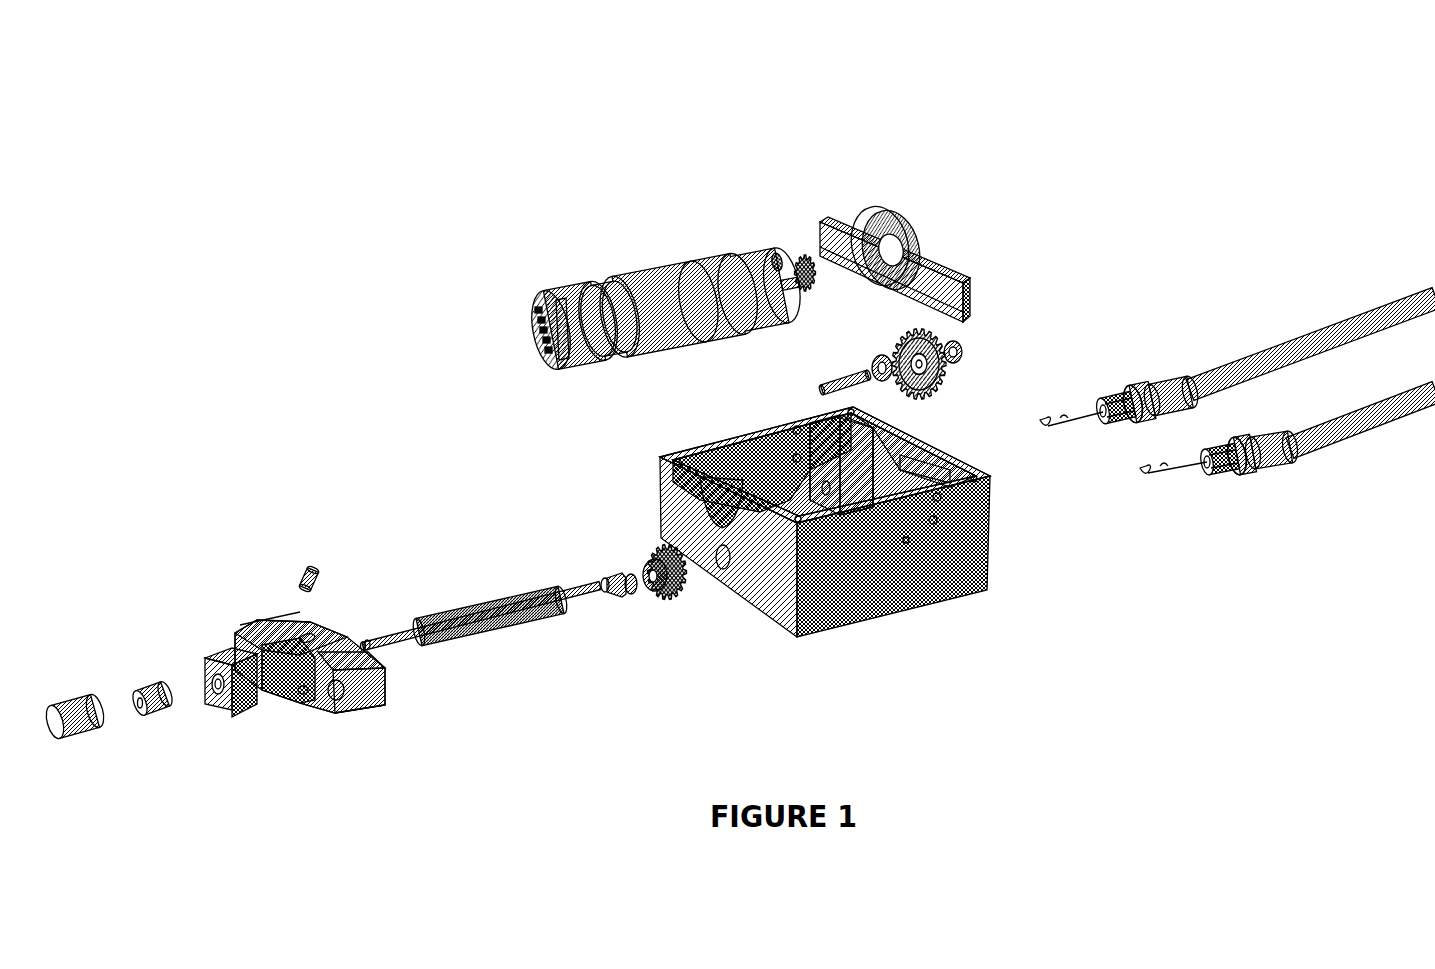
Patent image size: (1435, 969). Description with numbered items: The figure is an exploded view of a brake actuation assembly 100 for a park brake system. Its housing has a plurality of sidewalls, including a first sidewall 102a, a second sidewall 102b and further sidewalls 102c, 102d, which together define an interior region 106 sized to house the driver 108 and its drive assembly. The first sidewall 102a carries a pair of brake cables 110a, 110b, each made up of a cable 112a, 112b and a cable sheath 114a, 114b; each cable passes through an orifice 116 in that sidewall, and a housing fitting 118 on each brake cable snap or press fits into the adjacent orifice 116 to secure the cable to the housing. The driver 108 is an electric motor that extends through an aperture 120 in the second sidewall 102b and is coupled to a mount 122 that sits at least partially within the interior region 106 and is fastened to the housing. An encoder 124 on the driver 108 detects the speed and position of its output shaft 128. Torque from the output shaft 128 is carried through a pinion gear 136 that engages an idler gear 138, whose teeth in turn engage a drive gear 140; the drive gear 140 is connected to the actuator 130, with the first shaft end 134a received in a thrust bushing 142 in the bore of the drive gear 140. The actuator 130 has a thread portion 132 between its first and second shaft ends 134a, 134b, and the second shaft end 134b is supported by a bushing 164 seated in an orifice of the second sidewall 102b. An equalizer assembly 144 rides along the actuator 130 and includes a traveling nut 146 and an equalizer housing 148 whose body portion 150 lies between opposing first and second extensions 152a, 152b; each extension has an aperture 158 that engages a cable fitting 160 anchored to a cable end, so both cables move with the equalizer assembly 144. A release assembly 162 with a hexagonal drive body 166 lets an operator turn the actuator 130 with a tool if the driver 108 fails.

The brake actuation assembly 100 is at (1100, 160).
The first sidewall 102a is at (900, 447).
The second sidewall 102b is at (752, 600).
The sidewall 102c is at (900, 590).
The sidewall 102d is at (740, 437).
The interior region 106 is at (777, 447).
The driver 108 is at (653, 268).
The first brake cable 110a is at (1212, 338).
The second brake cable 110b is at (1295, 492).
The cable 112a is at (1083, 417).
The cable 112b is at (1190, 480).
The cable sheath 114a is at (1313, 333).
The cable sheath 114b is at (1342, 433).
The orifice 116 is at (826, 478).
The housing fitting 118 is at (1150, 385).
The aperture 120 is at (727, 502).
The mount 122 is at (847, 222).
The encoder 124 is at (538, 312).
The output shaft 128 is at (792, 258).
The actuator 130 is at (464, 588).
The thread portion 132 is at (500, 640).
The first shaft end 134a is at (605, 600).
The second shaft end 134b is at (372, 650).
The pinion gear 136 is at (798, 250).
The idler gear 138 is at (947, 383).
The drive gear 140 is at (668, 600).
The thrust bushing 142 is at (615, 575).
The equalizer assembly 144 is at (296, 747).
The traveling nut 146 is at (235, 715).
The equalizer housing 148 is at (333, 714).
The body portion 150 is at (337, 627).
The first extension 152a is at (260, 623).
The second extension 152b is at (360, 715).
The aperture 158 is at (230, 637).
The cable fitting 160 is at (1163, 487).
The release assembly 162 is at (126, 745).
The bushing 164 is at (145, 688).
The drive body 166 is at (68, 700).